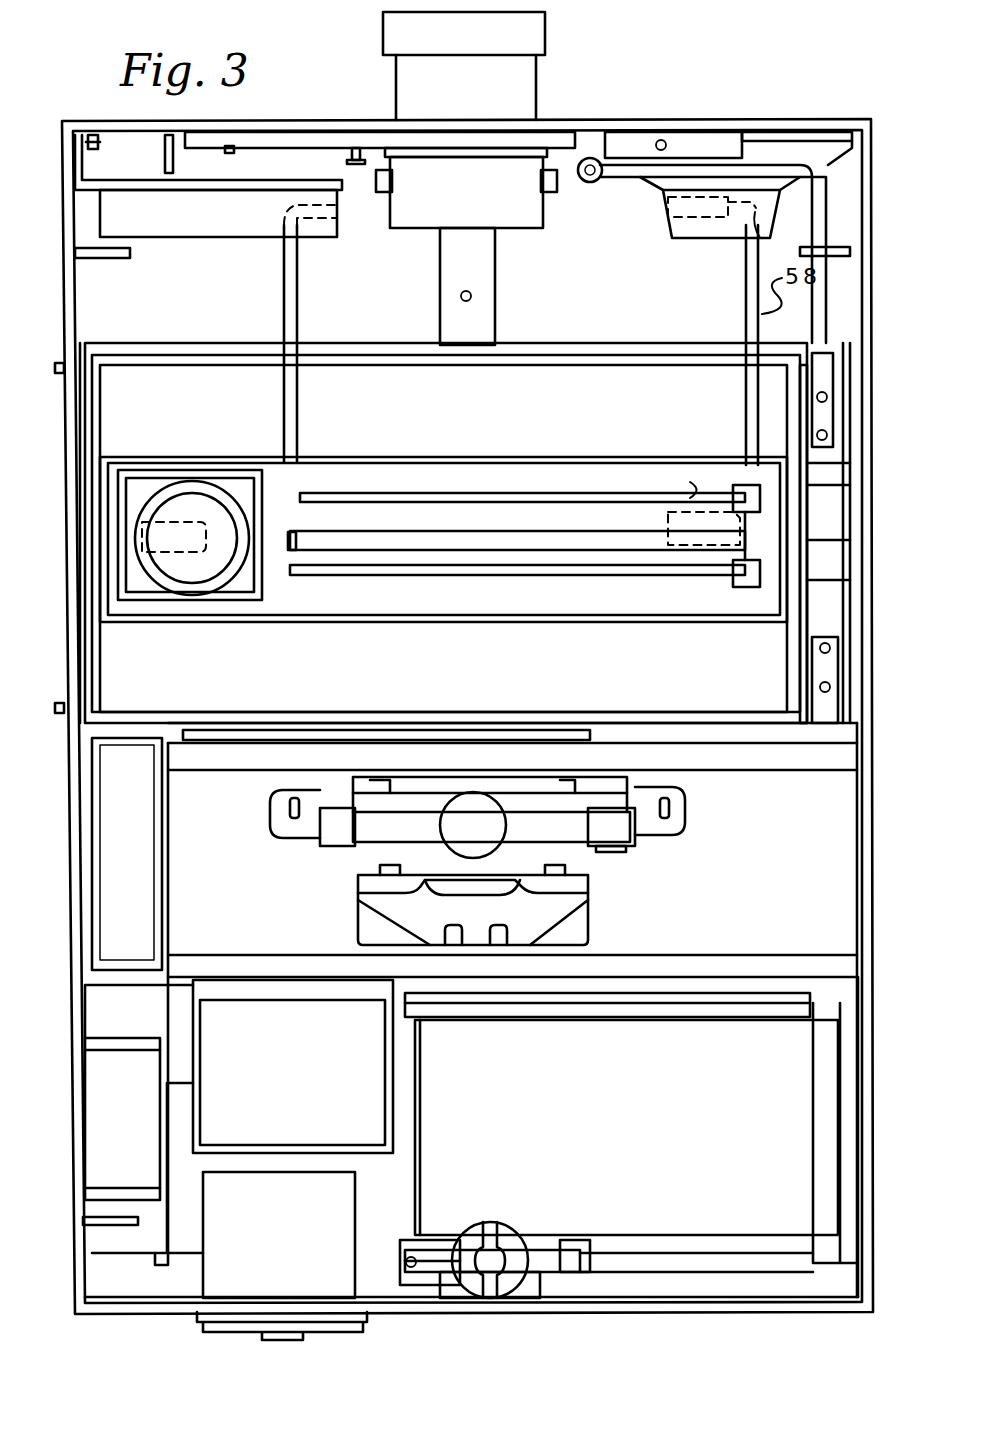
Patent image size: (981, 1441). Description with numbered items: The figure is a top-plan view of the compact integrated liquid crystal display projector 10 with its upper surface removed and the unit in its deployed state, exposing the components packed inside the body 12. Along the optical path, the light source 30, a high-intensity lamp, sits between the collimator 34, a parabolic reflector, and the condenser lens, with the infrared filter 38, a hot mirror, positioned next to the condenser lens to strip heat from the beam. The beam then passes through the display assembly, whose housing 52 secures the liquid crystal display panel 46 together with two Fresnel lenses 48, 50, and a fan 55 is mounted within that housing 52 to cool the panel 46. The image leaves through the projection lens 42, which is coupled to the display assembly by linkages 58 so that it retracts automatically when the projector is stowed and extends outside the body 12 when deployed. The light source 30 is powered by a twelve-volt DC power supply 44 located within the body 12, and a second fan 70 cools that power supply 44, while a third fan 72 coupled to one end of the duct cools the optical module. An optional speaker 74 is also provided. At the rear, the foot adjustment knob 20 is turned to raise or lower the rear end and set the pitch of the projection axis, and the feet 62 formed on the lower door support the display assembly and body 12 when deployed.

The compact integrated liquid crystal display projector 10 is at (806, 76).
The body 12 is at (70, 1060).
The rear foot adjustment knob 20 is at (505, 1248).
The light source 30 is at (477, 817).
The collimator 34 is at (554, 896).
The infrared filter 38 is at (452, 722).
The projection lens 42 is at (466, 178).
The power supply 44 is at (631, 1137).
The liquid crystal display panel 46 is at (444, 518).
The Fresnel lens 48 is at (458, 578).
The Fresnel lens 50 is at (512, 482).
The housing 52 is at (566, 622).
The fan 55 is at (222, 590).
The linkages 58 is at (284, 312).
The feet 62 is at (441, 511).
The second fan 70 is at (143, 1125).
The third fan 72 is at (127, 854).
The speaker 74 is at (702, 250).